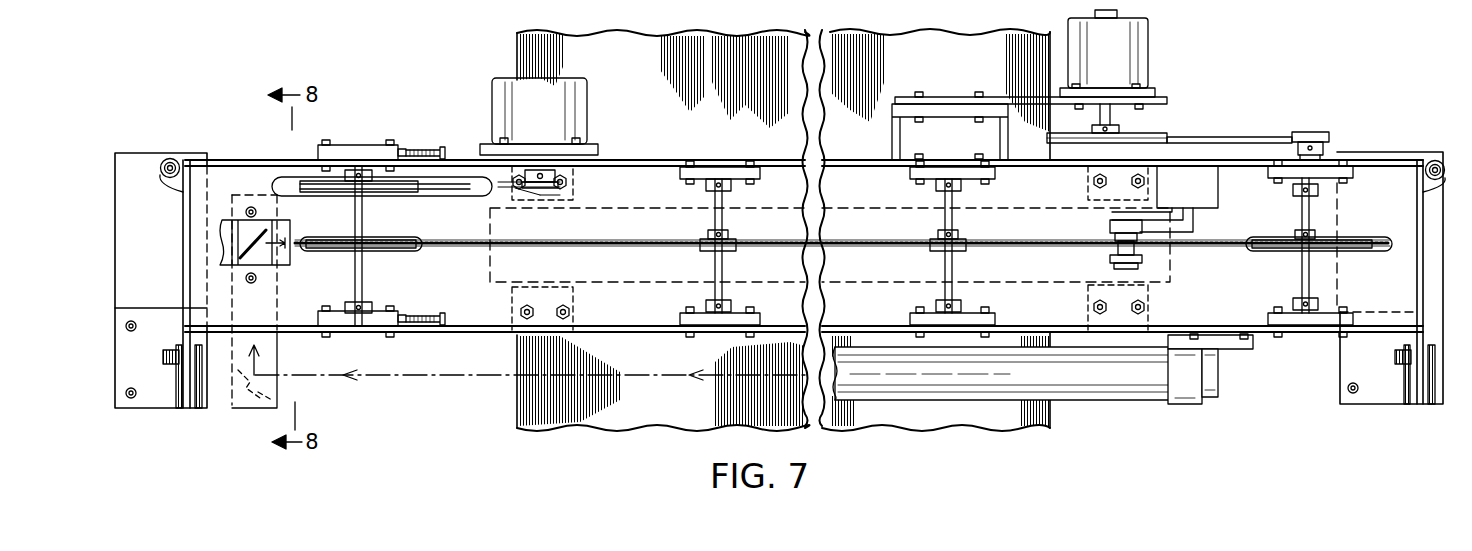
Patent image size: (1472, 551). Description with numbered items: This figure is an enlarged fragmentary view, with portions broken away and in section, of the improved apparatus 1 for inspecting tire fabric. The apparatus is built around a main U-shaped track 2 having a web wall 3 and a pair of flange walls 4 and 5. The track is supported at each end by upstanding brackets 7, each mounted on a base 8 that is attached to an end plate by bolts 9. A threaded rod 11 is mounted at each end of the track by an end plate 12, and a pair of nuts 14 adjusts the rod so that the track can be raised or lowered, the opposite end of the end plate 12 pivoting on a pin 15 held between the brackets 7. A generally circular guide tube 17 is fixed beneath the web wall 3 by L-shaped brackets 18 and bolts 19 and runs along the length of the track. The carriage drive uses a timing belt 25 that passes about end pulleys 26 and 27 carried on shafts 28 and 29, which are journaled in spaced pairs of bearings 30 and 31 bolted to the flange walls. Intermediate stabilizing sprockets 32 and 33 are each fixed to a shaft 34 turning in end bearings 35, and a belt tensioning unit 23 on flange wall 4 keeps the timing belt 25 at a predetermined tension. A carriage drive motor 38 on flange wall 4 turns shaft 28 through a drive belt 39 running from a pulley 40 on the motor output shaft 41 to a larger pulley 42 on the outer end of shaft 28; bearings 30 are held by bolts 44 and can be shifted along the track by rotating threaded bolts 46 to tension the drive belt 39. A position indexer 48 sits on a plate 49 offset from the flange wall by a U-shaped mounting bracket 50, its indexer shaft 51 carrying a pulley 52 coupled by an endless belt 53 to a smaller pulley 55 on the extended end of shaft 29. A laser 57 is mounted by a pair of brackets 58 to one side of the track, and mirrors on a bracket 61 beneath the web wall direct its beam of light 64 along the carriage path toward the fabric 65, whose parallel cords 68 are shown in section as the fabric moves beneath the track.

The improved apparatus 1 is at (1268, 125).
The main U-shaped track 2 is at (646, 175).
The web wall 3 is at (862, 276).
The flange wall 4 is at (872, 163).
The flange wall 5 is at (608, 326).
The upstanding brackets 7 is at (180, 400).
The base 8 is at (130, 153).
The bolts 9 is at (131, 399).
The threaded rod 11 is at (172, 158).
The end plate 12 is at (183, 240).
The nuts 14 is at (165, 180).
The pin 15 is at (170, 350).
The guide tube 17 is at (1015, 282).
The L-shaped brackets 18 is at (530, 285).
The bolts 19 is at (514, 302).
The belt tensioning unit 23 is at (1190, 198).
The timing belt 25 is at (1000, 243).
The end pulley 26 is at (378, 240).
The end pulley 27 is at (1275, 250).
The shaft 28 is at (355, 280).
The shaft 29 is at (1312, 285).
The bearings 30 is at (348, 145).
The bearings 31 is at (1350, 176).
The intermediate stabilizing sprocket 32 is at (725, 248).
The intermediate stabilizing sprocket 33 is at (940, 247).
The shaft 34 is at (714, 222).
The end bearings 35 is at (720, 167).
The carriage drive motor 38 is at (515, 100).
The drive belt 39 is at (468, 193).
The pulley 40 is at (536, 190).
The motor output shaft 41 is at (540, 170).
The larger pulley 42 is at (310, 182).
The bolts 44 is at (398, 148).
The threaded bolts 46 is at (443, 147).
The position indexer 48 is at (1117, 38).
The plate 49 is at (1163, 99).
The U-shaped mounting bracket 50 is at (951, 105).
The indexer shaft 51 is at (1105, 104).
The pulley 52 is at (1147, 135).
The endless belt 53 is at (1232, 137).
The smaller pulley 55 is at (1313, 133).
The laser 57 is at (1103, 372).
The brackets 58 is at (1186, 390).
The bracket 61 is at (248, 402).
The beam of light 64 is at (455, 378).
The fabric 65 is at (620, 50).
The cords 68 is at (747, 68).